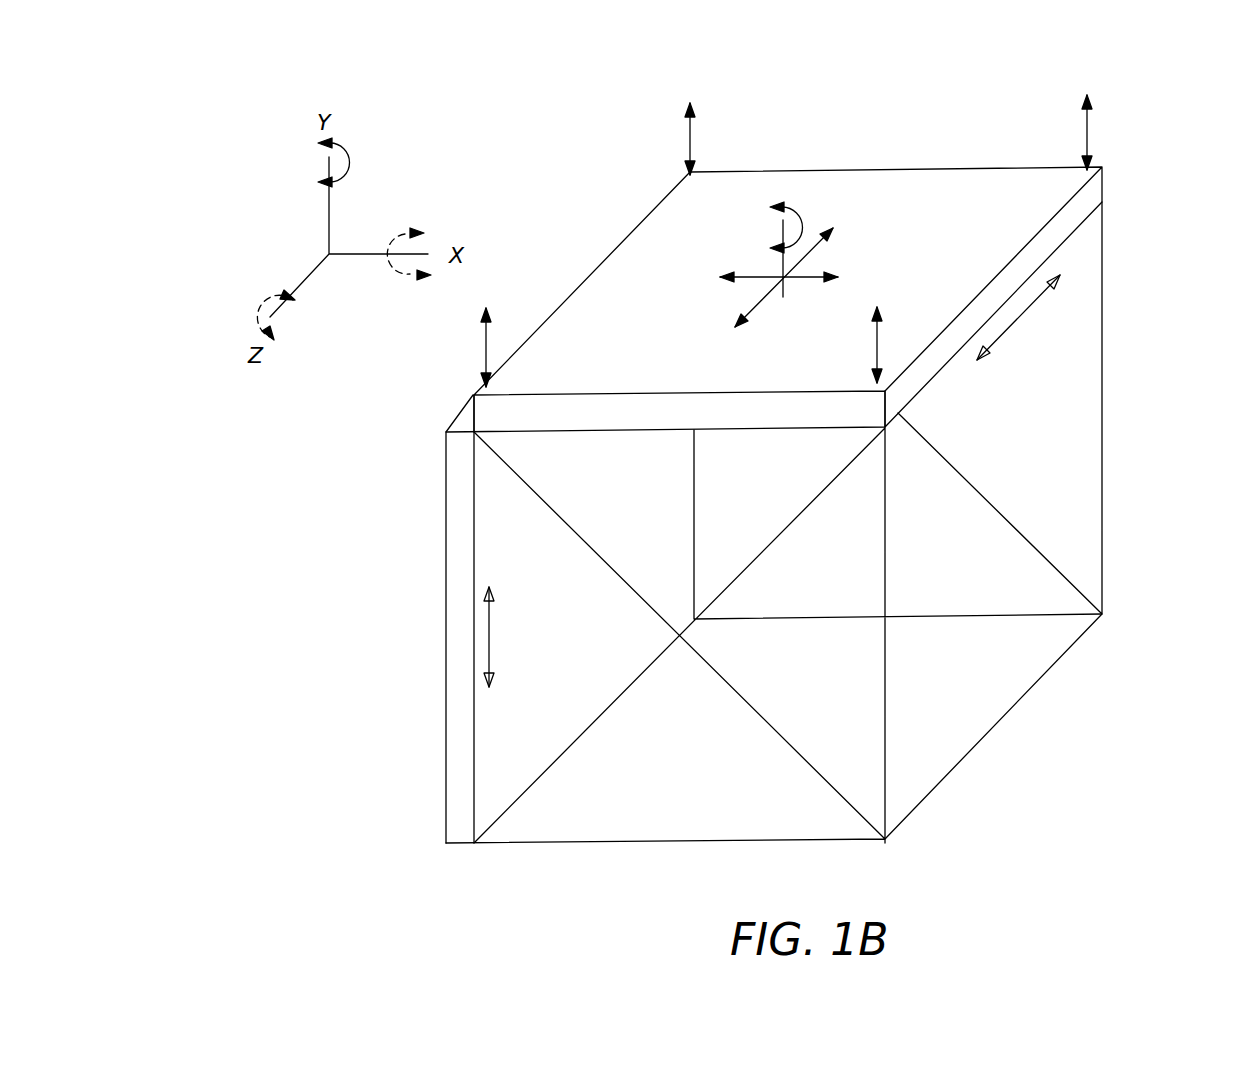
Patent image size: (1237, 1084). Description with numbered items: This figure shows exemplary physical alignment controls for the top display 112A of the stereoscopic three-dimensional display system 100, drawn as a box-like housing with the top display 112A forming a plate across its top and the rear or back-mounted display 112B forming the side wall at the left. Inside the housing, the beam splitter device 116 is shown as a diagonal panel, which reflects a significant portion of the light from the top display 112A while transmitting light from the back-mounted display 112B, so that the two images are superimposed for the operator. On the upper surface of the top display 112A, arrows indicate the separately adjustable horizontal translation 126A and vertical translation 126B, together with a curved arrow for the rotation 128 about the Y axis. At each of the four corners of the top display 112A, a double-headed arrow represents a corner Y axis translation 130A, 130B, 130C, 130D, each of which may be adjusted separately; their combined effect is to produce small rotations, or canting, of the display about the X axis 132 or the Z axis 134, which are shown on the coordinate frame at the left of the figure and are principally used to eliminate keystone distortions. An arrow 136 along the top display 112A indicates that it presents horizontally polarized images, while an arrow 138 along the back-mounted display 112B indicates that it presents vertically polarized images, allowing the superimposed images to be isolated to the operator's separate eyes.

The alignable display system 100 is at (1140, 155).
The top display 112A is at (748, 172).
The back-mounted display 112B is at (446, 618).
The beam splitter device 116 is at (1040, 555).
The horizontal translation 126A is at (760, 305).
The vertical translation 126B is at (823, 260).
The rotation 128 is at (800, 215).
The corner Y axis translation 130A is at (693, 128).
The corner Y axis translation 130B is at (1092, 120).
The corner Y axis translation 130C is at (484, 348).
The corner Y axis translation 130D is at (872, 367).
The X axis 132 is at (403, 232).
The Z axis 134 is at (262, 298).
The arrow indicating horizontal polarization 136 is at (1020, 317).
The arrow indicating vertical polarization 138 is at (484, 660).